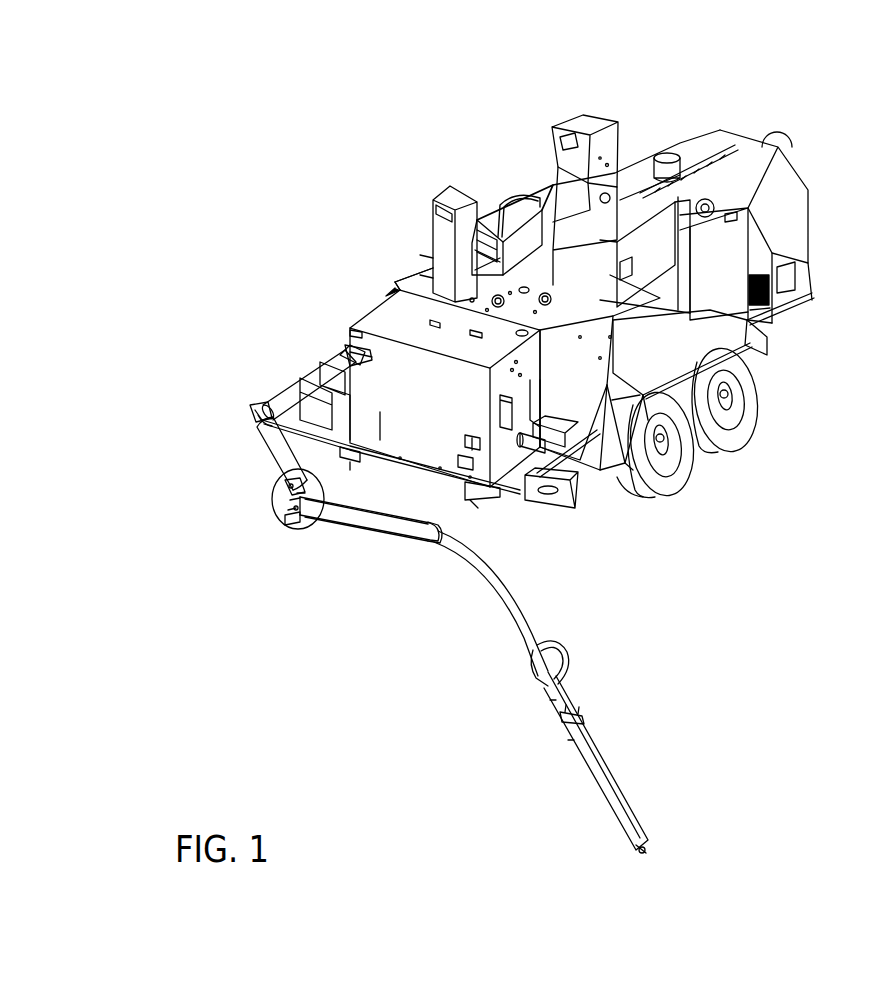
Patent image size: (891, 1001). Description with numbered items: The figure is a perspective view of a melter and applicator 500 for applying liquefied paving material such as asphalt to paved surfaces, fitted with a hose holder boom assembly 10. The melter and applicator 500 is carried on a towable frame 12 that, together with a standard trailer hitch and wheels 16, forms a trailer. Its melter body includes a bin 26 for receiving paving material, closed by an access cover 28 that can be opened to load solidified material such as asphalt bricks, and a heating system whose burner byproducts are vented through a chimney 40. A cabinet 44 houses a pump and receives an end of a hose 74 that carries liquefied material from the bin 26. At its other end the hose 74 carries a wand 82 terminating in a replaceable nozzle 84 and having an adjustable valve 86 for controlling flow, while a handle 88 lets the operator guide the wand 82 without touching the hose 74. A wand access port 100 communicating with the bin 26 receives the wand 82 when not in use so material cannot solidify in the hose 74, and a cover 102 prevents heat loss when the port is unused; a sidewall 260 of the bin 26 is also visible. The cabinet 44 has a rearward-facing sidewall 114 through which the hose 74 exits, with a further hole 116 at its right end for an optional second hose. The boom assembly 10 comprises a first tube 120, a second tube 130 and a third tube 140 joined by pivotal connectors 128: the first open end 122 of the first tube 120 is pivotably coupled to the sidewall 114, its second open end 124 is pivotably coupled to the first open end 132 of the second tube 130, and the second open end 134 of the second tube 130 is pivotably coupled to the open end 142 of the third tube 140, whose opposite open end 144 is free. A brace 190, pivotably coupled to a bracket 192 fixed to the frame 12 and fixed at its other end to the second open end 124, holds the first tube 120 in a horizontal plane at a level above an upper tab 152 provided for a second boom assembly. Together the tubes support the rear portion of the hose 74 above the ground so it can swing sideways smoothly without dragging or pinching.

The hose holder boom assembly 10 is at (348, 548).
The frame 12 is at (788, 307).
The wheels 16 is at (667, 480).
The bin 26 is at (393, 262).
The access cover 28 is at (487, 224).
The chimney 40 is at (435, 232).
The cabinet 44 is at (385, 425).
The hose 74 is at (515, 628).
The wand 82 is at (657, 848).
The nozzle 84 is at (645, 855).
The adjustable valve 86 is at (647, 850).
The handle 88 is at (563, 645).
The wand access port 100 is at (617, 474).
The cover 102 is at (737, 333).
The sidewall 114 is at (420, 413).
The hole 116 is at (513, 450).
The first tube 120 is at (303, 382).
The first open end 122 is at (353, 352).
The second open end 124 is at (270, 398).
The pivotal connector 128 is at (396, 355).
The second tube 130 is at (275, 462).
The first open end 132 is at (260, 430).
The second open end 134 is at (290, 482).
The third tube 140 is at (363, 522).
The open end 142 is at (315, 508).
The open end 144 is at (413, 533).
The upper tab 152 is at (473, 437).
The brace 190 is at (297, 437).
The bracket 192 is at (352, 453).
The sidewall 260 is at (652, 331).
The melter and applicator 500 is at (639, 146).